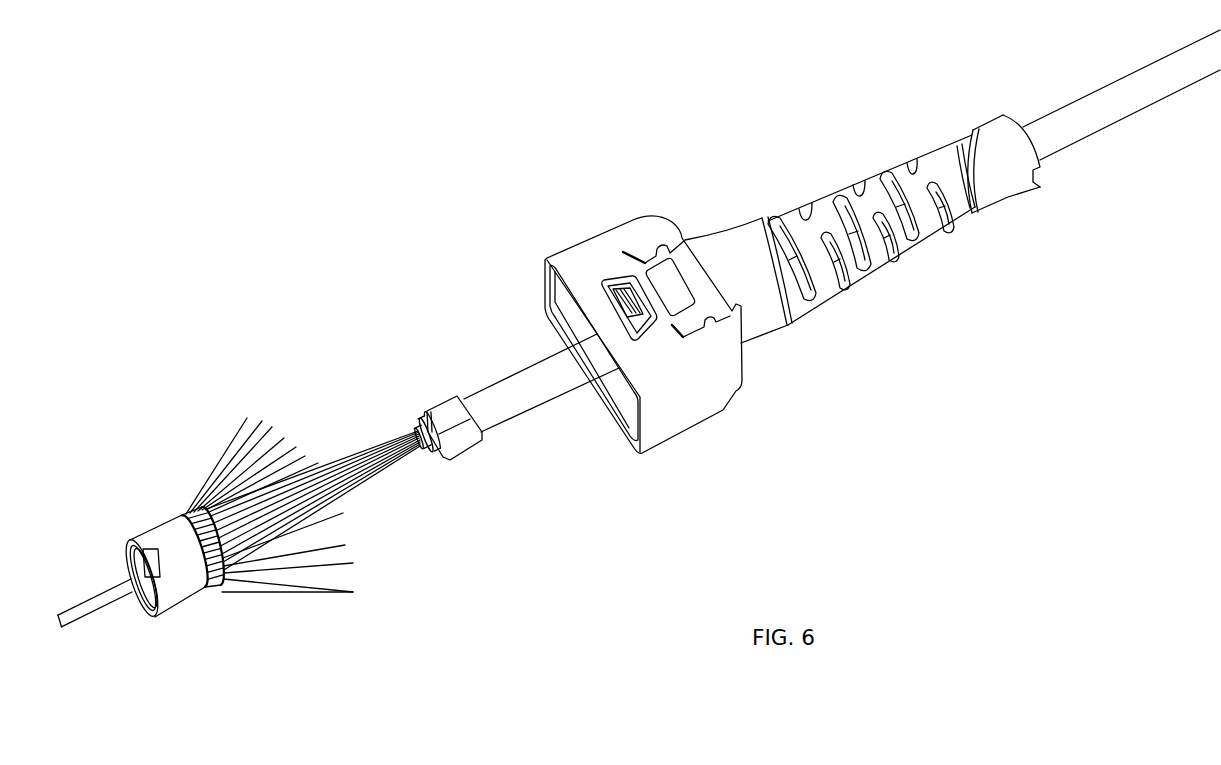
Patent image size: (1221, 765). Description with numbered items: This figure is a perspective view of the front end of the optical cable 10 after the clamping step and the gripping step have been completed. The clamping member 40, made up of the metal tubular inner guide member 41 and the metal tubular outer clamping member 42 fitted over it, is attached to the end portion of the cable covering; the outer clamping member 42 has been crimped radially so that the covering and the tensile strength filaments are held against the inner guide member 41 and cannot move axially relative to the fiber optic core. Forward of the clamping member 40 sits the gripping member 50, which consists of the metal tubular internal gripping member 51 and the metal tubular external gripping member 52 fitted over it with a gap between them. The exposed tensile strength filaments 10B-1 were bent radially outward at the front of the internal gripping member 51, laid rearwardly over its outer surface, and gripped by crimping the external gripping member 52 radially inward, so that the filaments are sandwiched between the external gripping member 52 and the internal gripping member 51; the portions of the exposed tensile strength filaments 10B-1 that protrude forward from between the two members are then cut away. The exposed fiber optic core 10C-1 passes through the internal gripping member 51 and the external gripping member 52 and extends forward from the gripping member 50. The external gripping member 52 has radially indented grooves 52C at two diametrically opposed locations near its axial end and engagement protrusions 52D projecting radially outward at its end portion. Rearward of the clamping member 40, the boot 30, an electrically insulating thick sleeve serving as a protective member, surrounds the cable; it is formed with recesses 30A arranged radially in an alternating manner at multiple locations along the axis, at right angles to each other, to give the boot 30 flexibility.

The optical cable 10 is at (537, 385).
The exposed tensile strength filaments 10B-1 is at (303, 468).
The exposed fiber optic core 10C-1 is at (373, 445).
The boot 30 is at (952, 221).
The recesses 30A is at (840, 283).
The clamping member 40 is at (461, 500).
The inner guide member 41 is at (433, 455).
The outer clamping member 42 is at (470, 432).
The gripping member 50 is at (190, 575).
The internal gripping member 51 is at (205, 570).
The external gripping member 52 is at (173, 556).
The indented grooves 52C is at (203, 508).
The engagement protrusions 52D is at (147, 565).